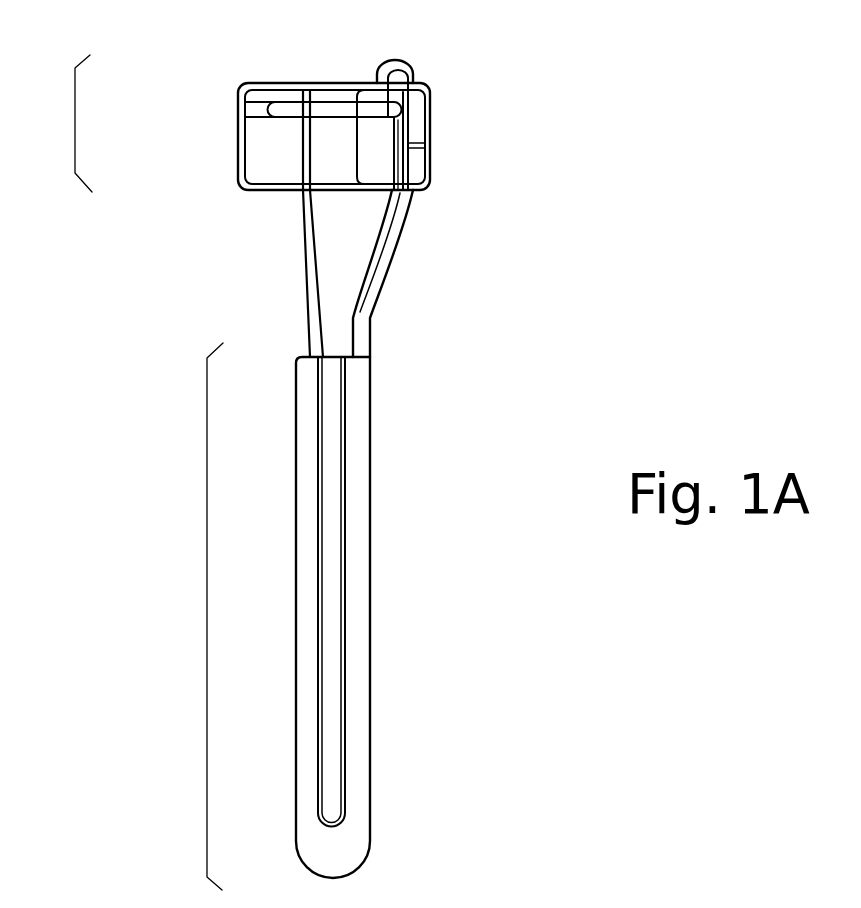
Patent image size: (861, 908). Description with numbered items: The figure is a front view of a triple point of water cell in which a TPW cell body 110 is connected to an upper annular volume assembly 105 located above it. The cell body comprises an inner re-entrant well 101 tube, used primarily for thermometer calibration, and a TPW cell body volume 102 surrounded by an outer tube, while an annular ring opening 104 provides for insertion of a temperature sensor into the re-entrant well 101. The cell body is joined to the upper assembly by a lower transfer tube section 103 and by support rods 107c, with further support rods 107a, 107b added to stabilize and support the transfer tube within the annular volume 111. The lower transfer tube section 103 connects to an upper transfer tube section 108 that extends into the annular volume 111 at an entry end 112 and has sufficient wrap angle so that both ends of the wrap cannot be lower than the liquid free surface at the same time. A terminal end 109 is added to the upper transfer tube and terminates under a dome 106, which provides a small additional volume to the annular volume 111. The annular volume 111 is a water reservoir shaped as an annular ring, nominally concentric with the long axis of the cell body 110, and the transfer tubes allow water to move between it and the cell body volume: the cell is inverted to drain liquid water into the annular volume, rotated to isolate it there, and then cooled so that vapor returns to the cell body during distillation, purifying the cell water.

The re-entrant well 101 is at (332, 677).
The TPW Cell body volume 102 is at (357, 523).
The lower transfer tube section 103 is at (383, 253).
The annular ring opening 104 is at (300, 83).
The upper annular volume assembly 105 is at (55, 123).
The dome 106 is at (403, 62).
The support rod 107a is at (413, 145).
The support rod 107b is at (243, 112).
The support rod 107c is at (313, 285).
The upper transfer tube section 108 is at (273, 108).
The terminal end of upper transfer tube section 109 is at (415, 72).
The triple point water cell body 110 is at (181, 616).
The annular volume 111 is at (415, 120).
The entry end of upper transfer tube section 112 is at (410, 195).